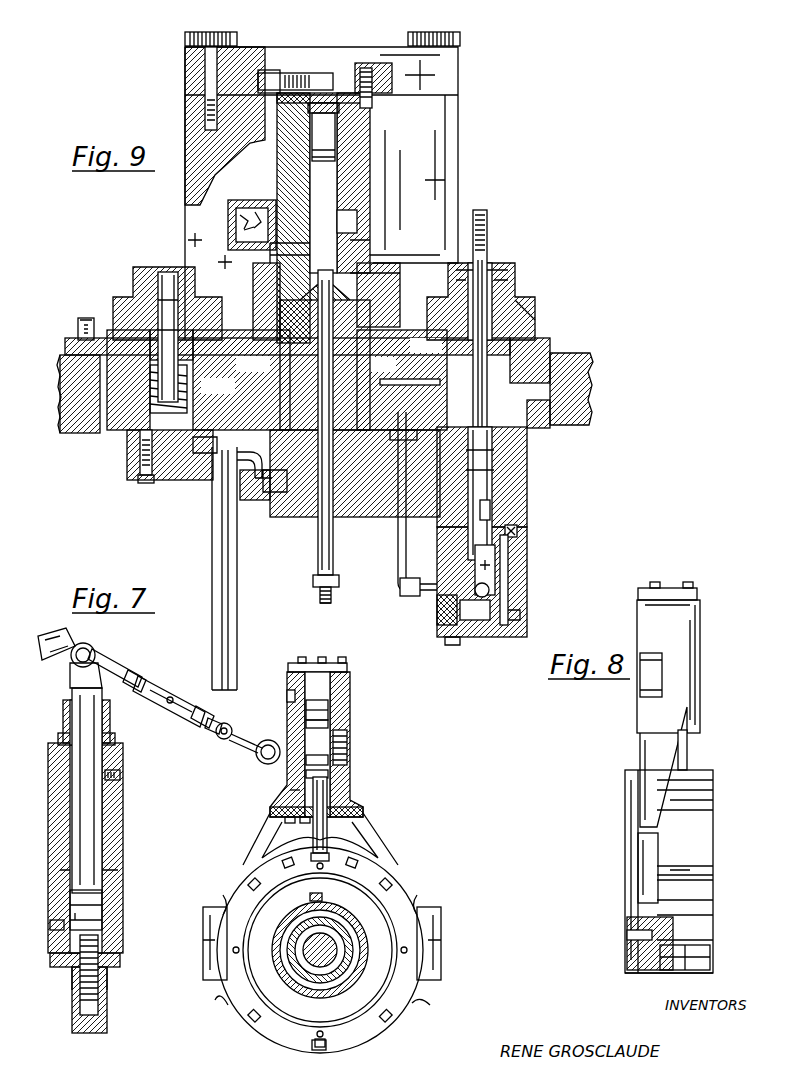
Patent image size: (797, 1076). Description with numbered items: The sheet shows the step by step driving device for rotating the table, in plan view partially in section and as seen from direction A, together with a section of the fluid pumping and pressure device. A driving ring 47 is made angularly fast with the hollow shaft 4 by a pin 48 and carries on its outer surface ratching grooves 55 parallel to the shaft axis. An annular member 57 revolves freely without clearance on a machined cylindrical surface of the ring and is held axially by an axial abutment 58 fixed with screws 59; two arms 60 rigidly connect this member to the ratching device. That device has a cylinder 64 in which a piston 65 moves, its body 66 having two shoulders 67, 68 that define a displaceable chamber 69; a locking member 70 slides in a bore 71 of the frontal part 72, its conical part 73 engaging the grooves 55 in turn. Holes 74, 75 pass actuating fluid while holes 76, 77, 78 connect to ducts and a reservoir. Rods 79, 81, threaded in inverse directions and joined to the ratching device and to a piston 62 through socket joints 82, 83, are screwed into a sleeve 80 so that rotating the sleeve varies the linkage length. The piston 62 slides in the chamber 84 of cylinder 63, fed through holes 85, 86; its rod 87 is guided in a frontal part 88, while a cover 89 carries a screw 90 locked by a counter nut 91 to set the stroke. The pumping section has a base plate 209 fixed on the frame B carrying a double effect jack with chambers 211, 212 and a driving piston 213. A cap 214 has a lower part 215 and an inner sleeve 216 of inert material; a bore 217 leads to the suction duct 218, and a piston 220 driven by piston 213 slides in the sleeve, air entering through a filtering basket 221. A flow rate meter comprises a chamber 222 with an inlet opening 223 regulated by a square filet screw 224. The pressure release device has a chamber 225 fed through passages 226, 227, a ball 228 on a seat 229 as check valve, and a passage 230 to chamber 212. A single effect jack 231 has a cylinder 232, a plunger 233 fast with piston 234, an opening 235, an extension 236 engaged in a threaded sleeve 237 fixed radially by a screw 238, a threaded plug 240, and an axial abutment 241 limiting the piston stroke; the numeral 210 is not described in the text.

In FIG. 7, the hollow shaft 4 is at (345, 925).
In FIG. 7, the driving ring 47 is at (330, 950).
In FIG. 8, the driving ring 47 is at (700, 915).
In FIG. 7, the pin 48 is at (320, 896).
In FIG. 7, the ratching grooves 55 is at (392, 1012).
In FIG. 8, the ratching grooves 55 is at (708, 872).
In FIG. 7, the annular member 57 is at (312, 1048).
In FIG. 8, the annular member 57 is at (632, 972).
In FIG. 8, the axial abutment 58 is at (627, 950).
In FIG. 8, the screws 59 is at (630, 935).
In FIG. 7, the arms 60 is at (248, 858).
In FIG. 8, the arms 60 is at (668, 742).
In FIG. 7, the piston 62 is at (102, 912).
In FIG. 7, the cylinder 63 is at (116, 845).
In FIG. 7, the cylinder 64 is at (336, 700).
In FIG. 7, the piston 65 is at (330, 712).
In FIG. 7, the body 66 is at (283, 780).
In FIG. 7, the shoulder 67 is at (296, 715).
In FIG. 7, the shoulder 68 is at (272, 808).
In FIG. 7, the chamber 69 is at (350, 745).
In FIG. 7, the locking member 70 is at (327, 835).
In FIG. 8, the locking member 70 is at (688, 760).
In FIG. 7, the bore 71 is at (305, 823).
In FIG. 7, the frontal part 72 is at (290, 823).
In FIG. 7, the conical part 73 is at (322, 850).
In FIG. 7, the hole 74 is at (348, 678).
In FIG. 7, the hole 75 is at (350, 782).
In FIG. 7, the hole 76 is at (350, 762).
In FIG. 7, the hole 77 is at (340, 732).
In FIG. 7, the hole 78 is at (287, 705).
In FIG. 7, the rod 79 is at (240, 726).
In FIG. 7, the sleeve 80 is at (158, 692).
In FIG. 7, the rod 81 is at (112, 668).
In FIG. 7, the socket joint 82 is at (257, 758).
In FIG. 7, the socket joint 83 is at (92, 646).
In FIG. 7, the chamber 84 is at (112, 947).
In FIG. 7, the hole 85 is at (50, 925).
In FIG. 7, the hole 86 is at (120, 775).
In FIG. 7, the rod 87 is at (87, 790).
In FIG. 7, the frontal part 88 is at (106, 730).
In FIG. 7, the cover 89 is at (58, 967).
In FIG. 7, the screw 90 is at (98, 1005).
In FIG. 7, the counter nut 91 is at (75, 990).
In FIG. 9, the base plate 209 is at (241, 380).
In FIG. 9, the screw 210 is at (86, 318).
In FIG. 9, the chamber 211 is at (352, 515).
In FIG. 9, the chamber 212 is at (402, 380).
In FIG. 9, the driving piston 213 is at (303, 510).
In FIG. 9, the cap 214 is at (360, 133).
In FIG. 9, the lower part 215 is at (362, 242).
In FIG. 9, the inner sleeve 216 is at (325, 137).
In FIG. 9, the bore 217 is at (323, 112).
In FIG. 9, the suction duct 218 is at (318, 73).
In FIG. 9, the piston 220 is at (349, 221).
In FIG. 9, the stainless steel basket 221 is at (252, 200).
In FIG. 9, the chamber 222 is at (138, 448).
In FIG. 9, the inlet opening 223 is at (125, 420).
In FIG. 9, the square filet screw 224 is at (192, 389).
In FIG. 9, the chamber 225 is at (495, 565).
In FIG. 9, the passage 226 is at (485, 637).
In FIG. 9, the passage 227 is at (518, 530).
In FIG. 9, the ball 228 is at (508, 600).
In FIG. 9, the seat 229 is at (450, 610).
In FIG. 9, the passage 230 is at (440, 590).
In FIG. 9, the single effect jack 231 is at (519, 493).
In FIG. 9, the cylinder 232 is at (470, 470).
In FIG. 9, the plunger 233 is at (490, 472).
In FIG. 9, the piston 234 is at (521, 451).
In FIG. 9, the opening 235 is at (545, 428).
In FIG. 9, the extension 236 is at (515, 280).
In FIG. 9, the threaded sleeve 237 is at (545, 340).
In FIG. 9, the screw 238 is at (411, 361).
In FIG. 9, the threaded plug 240 is at (522, 300).
In FIG. 9, the axial abutment 241 is at (490, 268).
In FIG. 7, the view direction A is at (186, 941).
In FIG. 9, the frame B is at (590, 358).